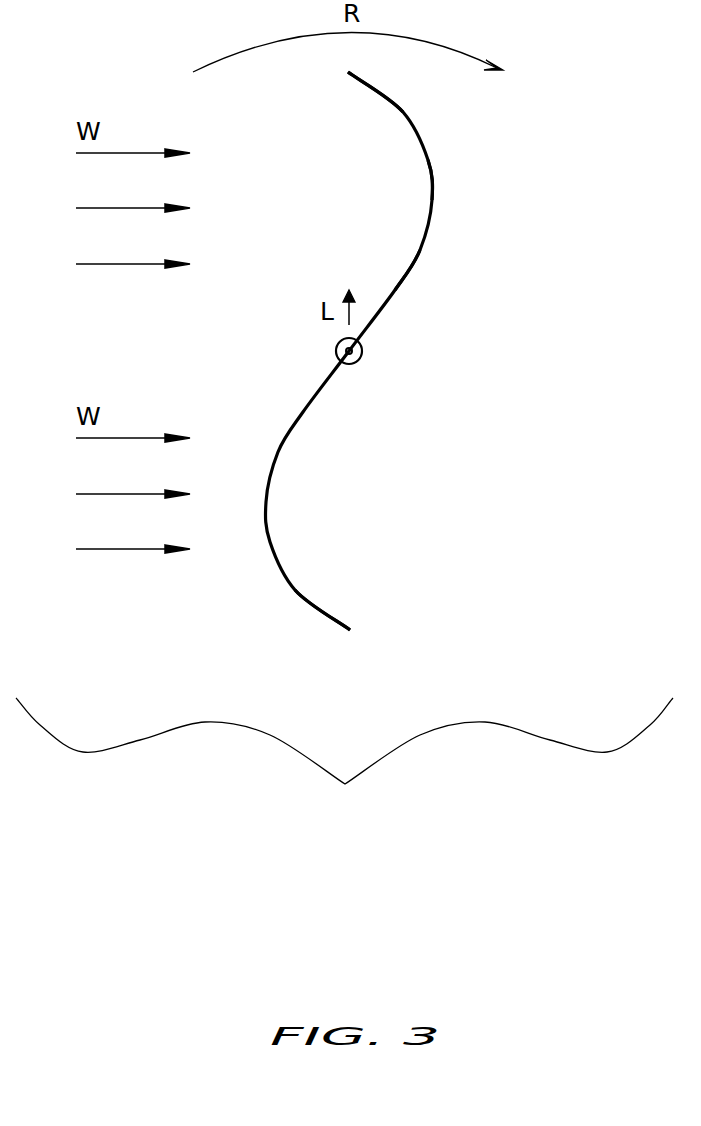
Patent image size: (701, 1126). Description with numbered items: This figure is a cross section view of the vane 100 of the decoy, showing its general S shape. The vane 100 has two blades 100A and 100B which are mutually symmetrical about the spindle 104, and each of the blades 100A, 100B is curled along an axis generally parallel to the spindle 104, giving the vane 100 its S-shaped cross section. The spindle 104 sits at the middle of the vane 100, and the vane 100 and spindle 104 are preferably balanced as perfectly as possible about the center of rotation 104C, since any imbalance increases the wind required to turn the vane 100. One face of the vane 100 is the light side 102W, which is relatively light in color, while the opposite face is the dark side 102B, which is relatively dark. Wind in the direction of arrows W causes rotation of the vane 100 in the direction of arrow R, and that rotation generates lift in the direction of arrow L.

The vane 100 is at (364, 502).
The blade 100A is at (303, 597).
The blade 100B is at (401, 112).
The light side 102W is at (384, 252).
The dark side 102B is at (505, 239).
The spindle 104 is at (341, 373).
The center of rotation 104C is at (360, 344).